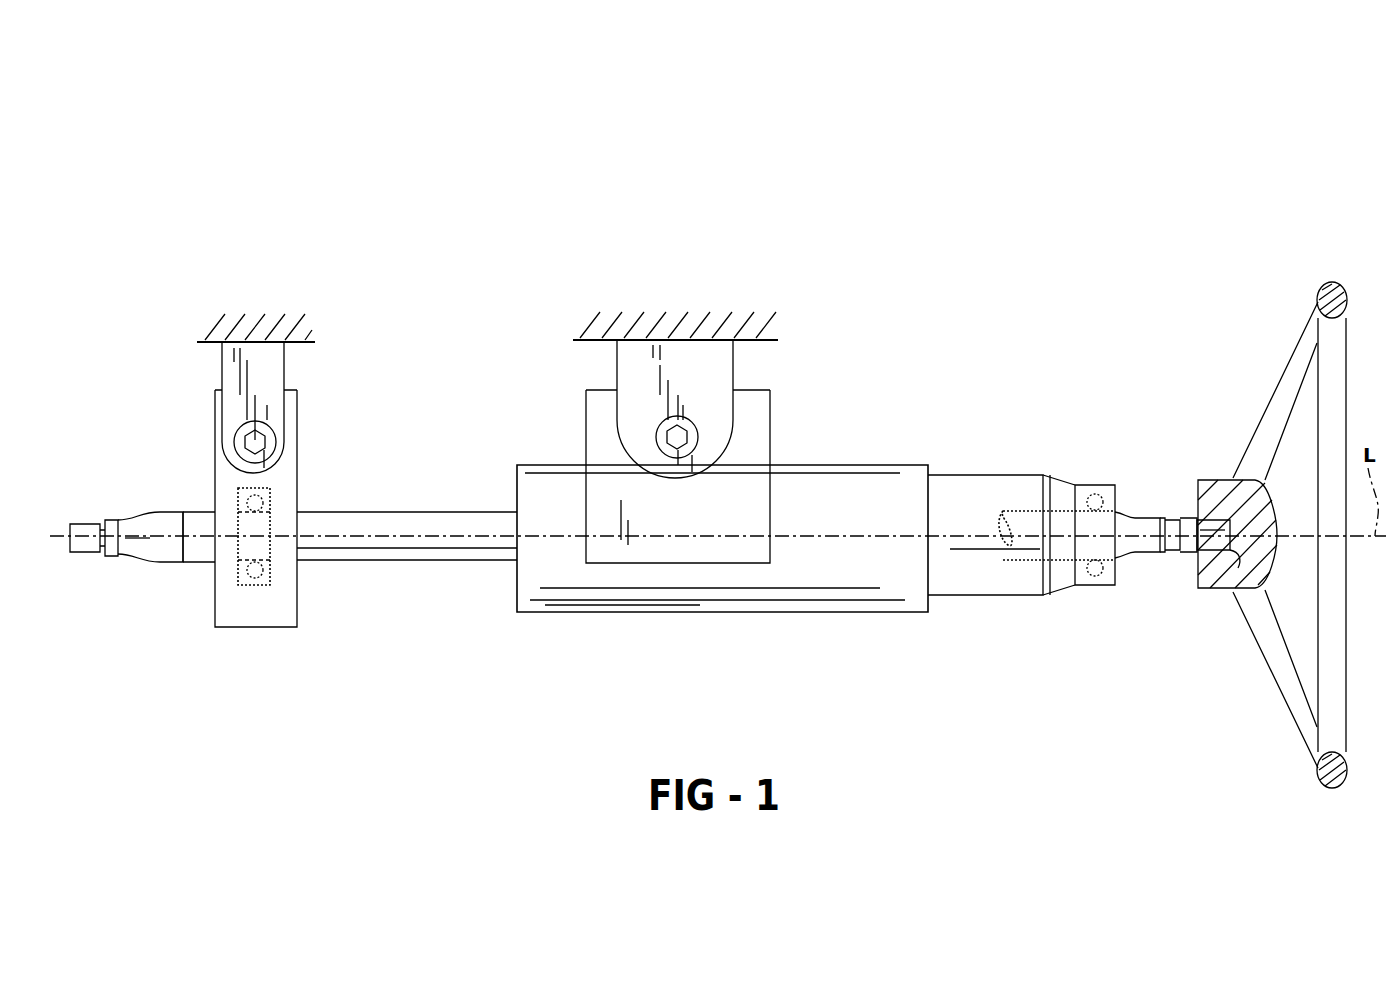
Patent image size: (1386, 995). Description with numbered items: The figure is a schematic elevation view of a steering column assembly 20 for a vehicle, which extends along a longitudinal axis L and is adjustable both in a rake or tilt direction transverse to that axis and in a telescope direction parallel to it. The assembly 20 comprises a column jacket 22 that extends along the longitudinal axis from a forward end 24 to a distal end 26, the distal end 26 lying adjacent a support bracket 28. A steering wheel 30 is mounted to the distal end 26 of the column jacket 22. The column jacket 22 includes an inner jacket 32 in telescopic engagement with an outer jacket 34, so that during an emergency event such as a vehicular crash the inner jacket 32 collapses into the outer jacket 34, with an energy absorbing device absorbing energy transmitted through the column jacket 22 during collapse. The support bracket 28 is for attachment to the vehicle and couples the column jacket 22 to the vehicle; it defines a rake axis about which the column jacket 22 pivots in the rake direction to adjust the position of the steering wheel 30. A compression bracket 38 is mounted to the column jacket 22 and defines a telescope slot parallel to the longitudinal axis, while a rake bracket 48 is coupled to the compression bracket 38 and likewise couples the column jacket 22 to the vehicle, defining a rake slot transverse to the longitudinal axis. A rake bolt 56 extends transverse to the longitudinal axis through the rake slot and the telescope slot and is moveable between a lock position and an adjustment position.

The steering column assembly 20 is at (1028, 194).
The column jacket 22 is at (857, 612).
The forward end 24 is at (70, 543).
The distal end 26 is at (1252, 546).
The support bracket 28 is at (285, 372).
The steering wheel 30 is at (1342, 284).
The inner jacket 32 is at (1012, 595).
The outer jacket 34 is at (558, 612).
The compression bracket 38 is at (580, 512).
The rake bracket 48 is at (617, 363).
The rake bolt 56 is at (674, 442).